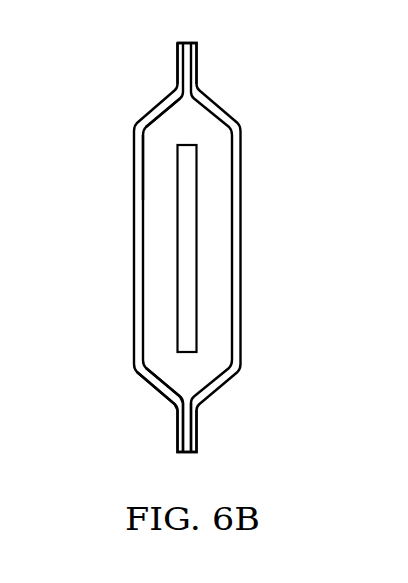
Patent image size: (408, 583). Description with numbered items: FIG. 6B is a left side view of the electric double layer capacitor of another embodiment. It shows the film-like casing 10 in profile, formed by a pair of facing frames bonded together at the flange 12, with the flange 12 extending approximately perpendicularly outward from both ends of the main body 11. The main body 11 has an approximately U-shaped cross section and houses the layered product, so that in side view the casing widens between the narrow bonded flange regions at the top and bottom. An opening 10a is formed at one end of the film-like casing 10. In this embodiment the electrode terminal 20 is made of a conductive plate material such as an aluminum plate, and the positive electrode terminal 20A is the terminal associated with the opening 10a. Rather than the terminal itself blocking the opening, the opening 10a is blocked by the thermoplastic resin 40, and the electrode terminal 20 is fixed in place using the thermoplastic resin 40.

The film-like casing 10 is at (240, 112).
The opening 10a is at (158, 121).
The main body 11 is at (134, 170).
The flange 12 is at (178, 52).
The positive electrode terminal 20A is at (160, 387).
The electrode terminal 20 is at (168, 410).
The thermoplastic resin 40 is at (218, 262).